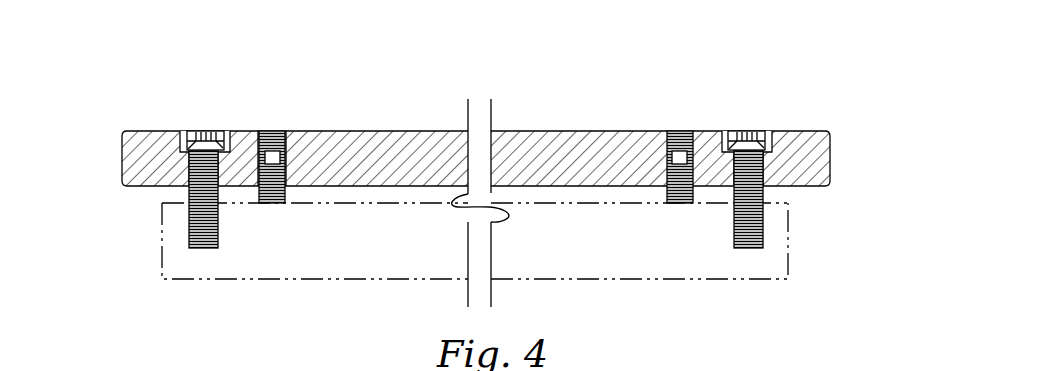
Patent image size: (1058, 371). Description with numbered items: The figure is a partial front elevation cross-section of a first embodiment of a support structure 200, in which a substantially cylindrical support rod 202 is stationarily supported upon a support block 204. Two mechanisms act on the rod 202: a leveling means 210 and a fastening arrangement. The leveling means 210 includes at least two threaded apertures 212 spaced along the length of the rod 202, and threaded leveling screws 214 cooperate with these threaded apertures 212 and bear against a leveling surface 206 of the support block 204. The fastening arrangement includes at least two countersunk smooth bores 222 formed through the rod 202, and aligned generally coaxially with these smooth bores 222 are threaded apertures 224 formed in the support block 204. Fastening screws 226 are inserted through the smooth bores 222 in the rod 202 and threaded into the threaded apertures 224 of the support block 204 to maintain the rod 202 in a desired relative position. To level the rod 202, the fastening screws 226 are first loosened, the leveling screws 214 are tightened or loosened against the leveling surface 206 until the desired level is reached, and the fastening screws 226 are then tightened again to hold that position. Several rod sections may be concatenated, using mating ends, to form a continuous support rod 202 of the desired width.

The support structure 200 is at (94, 132).
The support rod 202 is at (550, 131).
The support block 204 is at (293, 256).
The leveling surface 206 is at (580, 204).
The leveling means 210 is at (281, 123).
The threaded apertures 212 is at (270, 136).
The leveling screws 214 is at (286, 173).
The countersunk smooth bores 222 is at (188, 171).
The threaded apertures 224 is at (186, 229).
The fastening screws 226 is at (206, 134).